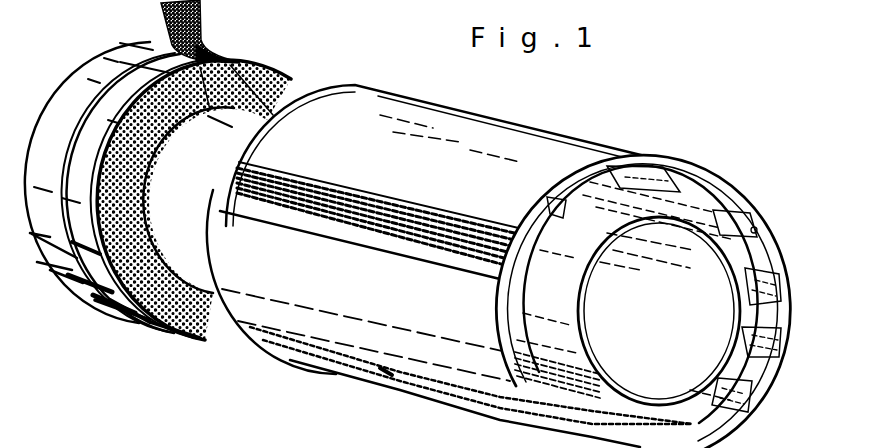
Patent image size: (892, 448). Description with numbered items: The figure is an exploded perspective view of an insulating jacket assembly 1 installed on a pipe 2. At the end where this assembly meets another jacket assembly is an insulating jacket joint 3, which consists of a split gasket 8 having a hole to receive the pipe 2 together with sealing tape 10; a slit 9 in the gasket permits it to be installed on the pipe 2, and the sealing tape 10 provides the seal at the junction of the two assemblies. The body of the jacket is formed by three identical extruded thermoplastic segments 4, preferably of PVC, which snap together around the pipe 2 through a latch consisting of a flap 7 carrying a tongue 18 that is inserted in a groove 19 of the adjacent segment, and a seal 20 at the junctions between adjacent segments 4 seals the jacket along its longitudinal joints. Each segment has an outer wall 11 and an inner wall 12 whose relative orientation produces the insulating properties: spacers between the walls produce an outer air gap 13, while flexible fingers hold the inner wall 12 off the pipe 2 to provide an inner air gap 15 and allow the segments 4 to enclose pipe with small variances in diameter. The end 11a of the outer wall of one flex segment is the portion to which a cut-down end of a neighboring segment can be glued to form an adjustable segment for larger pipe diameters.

The insulating jacket assembly 1 is at (87, 175).
The pipe 2 is at (360, 200).
The insulating jacket joint 3 is at (236, 336).
The extruded thermoplastic segment 4 is at (395, 368).
The flap 7 is at (306, 225).
The split gasket 8 is at (237, 64).
The slit 9 is at (262, 69).
The sealing tape 10 is at (116, 52).
The outer jacket assembly wall 11 is at (530, 199).
The end of outer wall 11a is at (280, 175).
The inner jacket assembly wall 12 is at (560, 228).
The outer air gap 13 is at (500, 293).
The inner air gap 15 is at (499, 318).
The tongue 18 is at (512, 282).
The groove 19 is at (415, 212).
The seal 20 is at (428, 250).